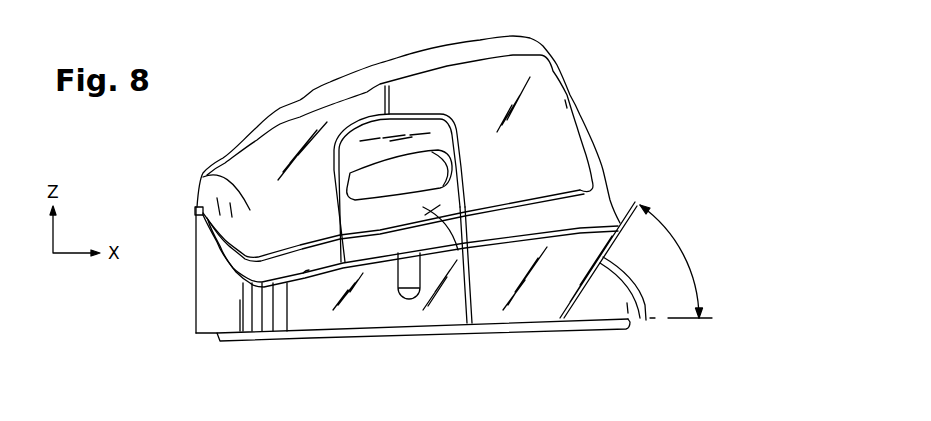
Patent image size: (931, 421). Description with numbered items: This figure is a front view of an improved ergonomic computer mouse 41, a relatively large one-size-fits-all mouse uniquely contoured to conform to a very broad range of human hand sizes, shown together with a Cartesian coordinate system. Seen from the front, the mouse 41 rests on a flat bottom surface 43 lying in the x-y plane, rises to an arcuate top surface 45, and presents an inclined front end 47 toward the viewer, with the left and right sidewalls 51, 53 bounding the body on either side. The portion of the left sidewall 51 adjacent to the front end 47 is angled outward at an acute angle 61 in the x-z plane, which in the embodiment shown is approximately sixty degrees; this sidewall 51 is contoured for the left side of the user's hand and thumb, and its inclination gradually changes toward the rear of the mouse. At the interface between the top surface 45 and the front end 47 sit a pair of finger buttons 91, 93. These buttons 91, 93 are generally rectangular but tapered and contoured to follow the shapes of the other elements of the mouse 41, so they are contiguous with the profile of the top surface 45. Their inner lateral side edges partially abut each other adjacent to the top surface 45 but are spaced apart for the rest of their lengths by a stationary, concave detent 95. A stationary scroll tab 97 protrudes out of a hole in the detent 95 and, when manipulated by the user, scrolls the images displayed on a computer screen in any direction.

The ergonomic computer mouse 41 is at (241, 34).
The flat bottom surface 43 is at (372, 338).
The arcuate top surface 45 is at (414, 62).
The inclined front end 47 is at (323, 308).
The left sidewall 51 is at (580, 297).
The right sidewall 53 is at (202, 298).
The acute angle 61 is at (677, 261).
The finger button 91 is at (567, 143).
The finger button 93 is at (210, 173).
The concave detent 95 is at (458, 310).
The scroll tab 97 is at (413, 166).